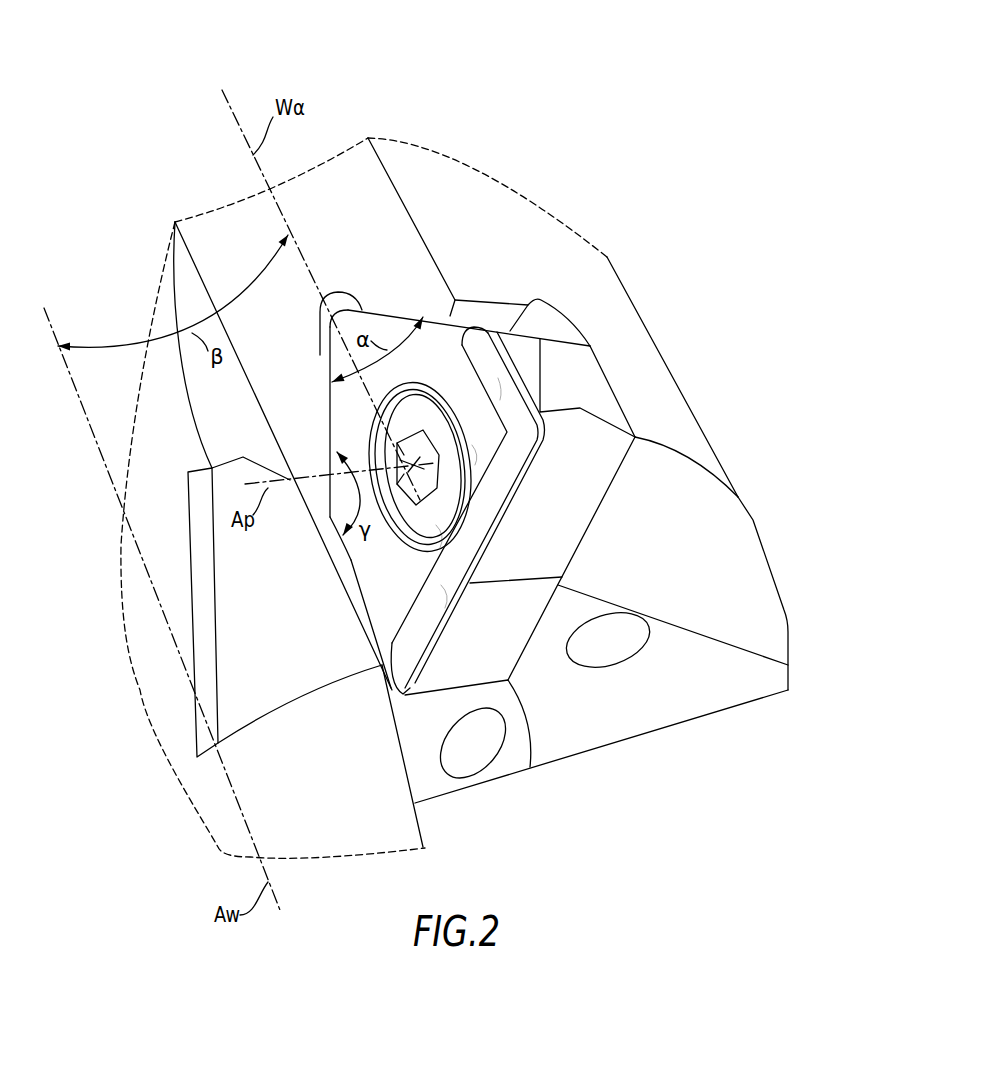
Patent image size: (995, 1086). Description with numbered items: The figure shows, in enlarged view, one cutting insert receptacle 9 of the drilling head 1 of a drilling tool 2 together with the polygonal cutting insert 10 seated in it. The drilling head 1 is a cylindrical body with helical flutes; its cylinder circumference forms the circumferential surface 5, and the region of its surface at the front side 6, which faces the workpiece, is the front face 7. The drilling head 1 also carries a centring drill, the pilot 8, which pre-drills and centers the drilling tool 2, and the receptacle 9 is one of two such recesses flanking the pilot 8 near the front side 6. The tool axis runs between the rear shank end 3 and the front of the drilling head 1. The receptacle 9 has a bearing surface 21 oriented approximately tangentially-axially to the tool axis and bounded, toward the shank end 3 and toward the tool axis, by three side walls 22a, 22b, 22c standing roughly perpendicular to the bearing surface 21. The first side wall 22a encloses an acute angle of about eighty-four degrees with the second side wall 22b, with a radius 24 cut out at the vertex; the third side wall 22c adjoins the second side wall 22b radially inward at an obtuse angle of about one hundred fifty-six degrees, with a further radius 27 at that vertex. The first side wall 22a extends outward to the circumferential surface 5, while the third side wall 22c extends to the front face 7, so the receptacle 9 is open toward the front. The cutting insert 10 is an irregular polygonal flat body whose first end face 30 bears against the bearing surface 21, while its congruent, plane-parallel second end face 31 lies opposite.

The drilling head 1 is at (454, 464).
The drilling tool 2 is at (610, 138).
The shank end 3 is at (433, 353).
The circumferential surface 5 is at (610, 280).
The front side 6 is at (581, 822).
The front face 7 is at (688, 710).
The pilot 8 is at (222, 693).
The receptacle 9 is at (605, 375).
The cutting insert 10 is at (598, 472).
The bearing surface 21 is at (600, 512).
The first side wall 22a is at (413, 307).
The second side wall 22b is at (330, 400).
The third side wall 22c is at (356, 597).
The radius 24 is at (341, 290).
The further radius 27 is at (328, 524).
The first end face 30 is at (589, 554).
The second end face 31 is at (387, 623).